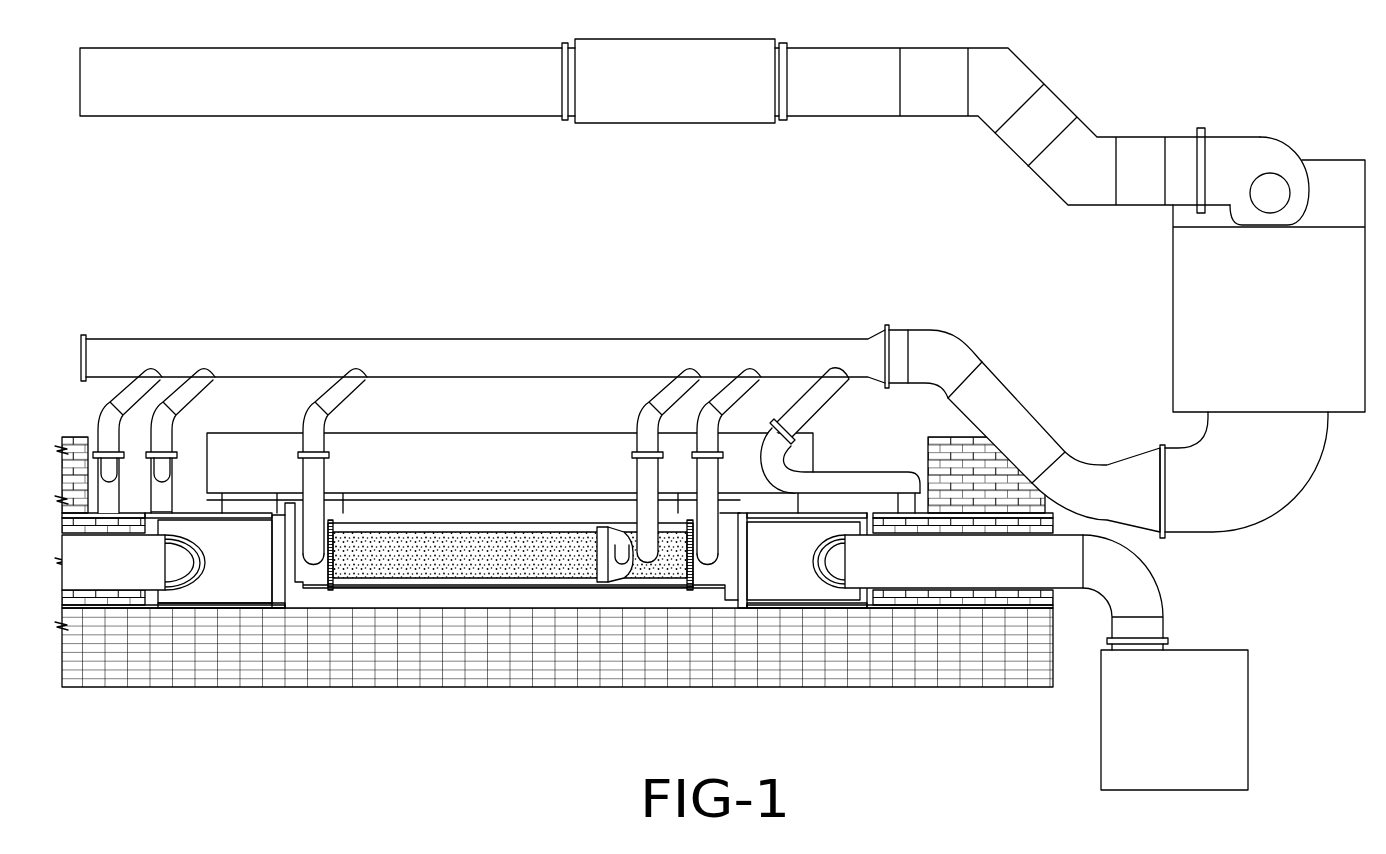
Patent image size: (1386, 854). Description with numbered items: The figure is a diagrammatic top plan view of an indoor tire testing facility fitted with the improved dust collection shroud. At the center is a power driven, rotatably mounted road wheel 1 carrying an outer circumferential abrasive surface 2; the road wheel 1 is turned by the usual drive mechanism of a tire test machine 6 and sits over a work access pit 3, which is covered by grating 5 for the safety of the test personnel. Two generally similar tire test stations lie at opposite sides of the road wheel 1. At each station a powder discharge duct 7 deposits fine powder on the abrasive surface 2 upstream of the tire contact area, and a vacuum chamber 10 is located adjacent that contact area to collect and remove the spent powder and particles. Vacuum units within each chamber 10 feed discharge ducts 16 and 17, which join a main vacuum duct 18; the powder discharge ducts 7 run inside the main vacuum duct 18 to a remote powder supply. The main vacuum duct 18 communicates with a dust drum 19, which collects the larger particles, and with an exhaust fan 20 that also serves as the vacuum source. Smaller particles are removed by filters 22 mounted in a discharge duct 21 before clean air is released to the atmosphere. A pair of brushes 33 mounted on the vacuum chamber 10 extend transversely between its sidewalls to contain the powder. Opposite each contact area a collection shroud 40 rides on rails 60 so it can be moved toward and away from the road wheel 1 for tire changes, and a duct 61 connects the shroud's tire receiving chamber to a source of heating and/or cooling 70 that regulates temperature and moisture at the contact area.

The road wheel 1 is at (493, 592).
The abrasive surface 2 is at (448, 562).
The work access pit 3 is at (537, 598).
The grating 5 is at (862, 660).
The tire test machine 6 is at (496, 430).
The powder discharge duct 7 is at (185, 395).
The vacuum chamber 10 is at (318, 590).
The discharge duct 16 is at (127, 395).
The discharge duct 17 is at (332, 395).
The main vacuum duct 18 is at (563, 350).
The dust drum 19 is at (1188, 298).
The exhaust fan 20 is at (1268, 183).
The discharge duct 21 is at (848, 100).
The filters 22 is at (662, 113).
The brushes 33 is at (341, 568).
The collection shroud 40 is at (235, 605).
The rails 60 is at (108, 605).
The duct 61 is at (167, 573).
The source of heating and/or cooling 70 is at (1233, 725).